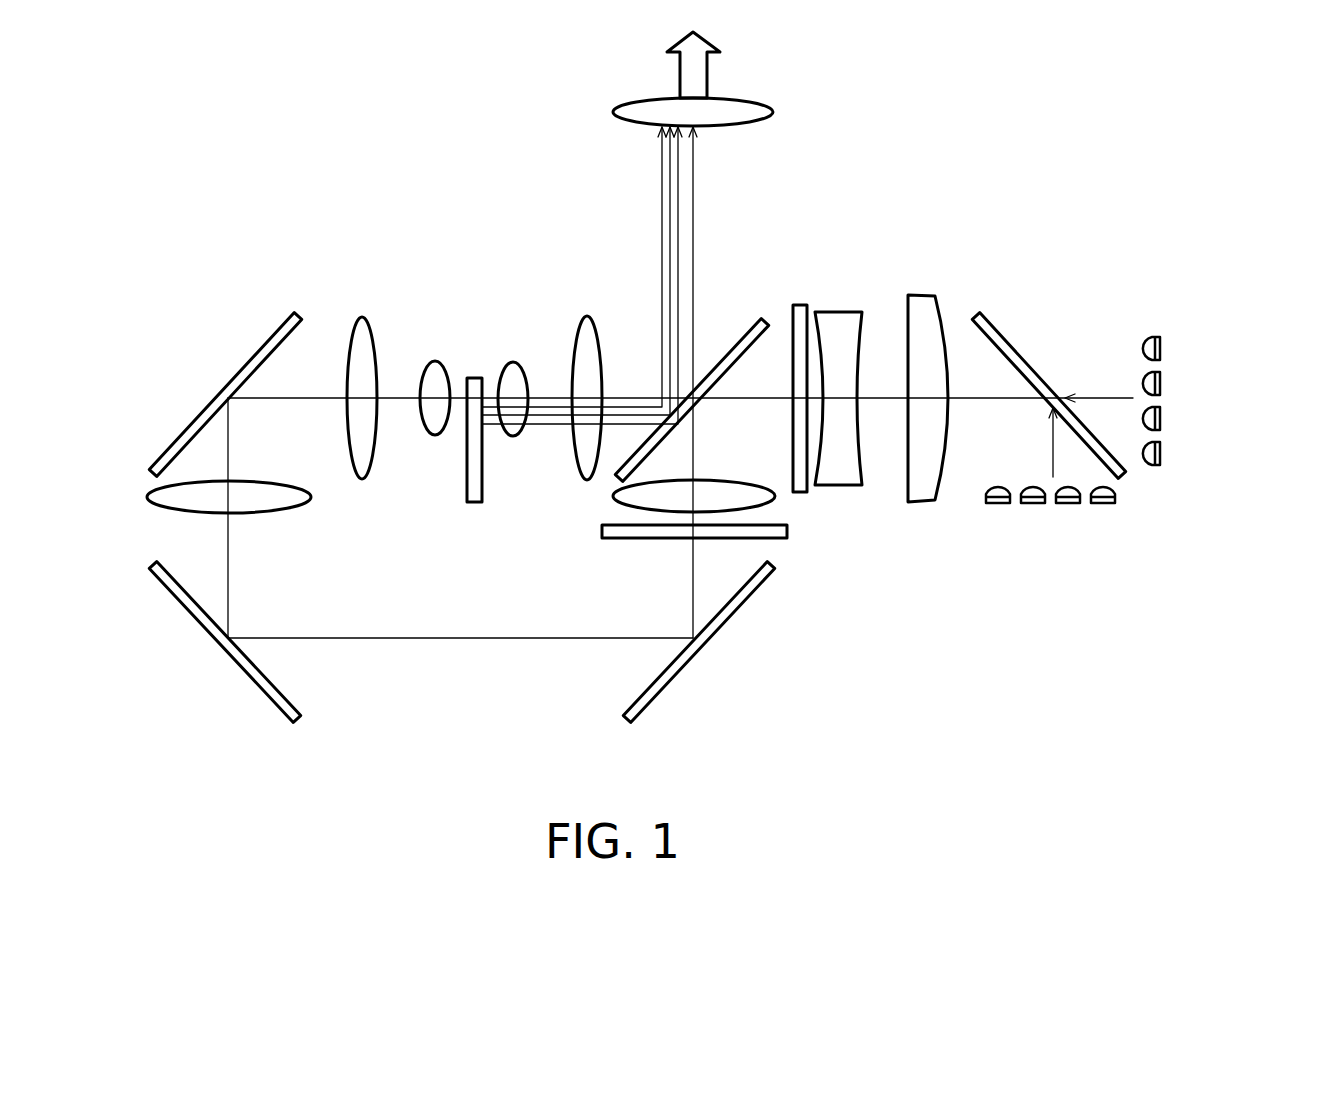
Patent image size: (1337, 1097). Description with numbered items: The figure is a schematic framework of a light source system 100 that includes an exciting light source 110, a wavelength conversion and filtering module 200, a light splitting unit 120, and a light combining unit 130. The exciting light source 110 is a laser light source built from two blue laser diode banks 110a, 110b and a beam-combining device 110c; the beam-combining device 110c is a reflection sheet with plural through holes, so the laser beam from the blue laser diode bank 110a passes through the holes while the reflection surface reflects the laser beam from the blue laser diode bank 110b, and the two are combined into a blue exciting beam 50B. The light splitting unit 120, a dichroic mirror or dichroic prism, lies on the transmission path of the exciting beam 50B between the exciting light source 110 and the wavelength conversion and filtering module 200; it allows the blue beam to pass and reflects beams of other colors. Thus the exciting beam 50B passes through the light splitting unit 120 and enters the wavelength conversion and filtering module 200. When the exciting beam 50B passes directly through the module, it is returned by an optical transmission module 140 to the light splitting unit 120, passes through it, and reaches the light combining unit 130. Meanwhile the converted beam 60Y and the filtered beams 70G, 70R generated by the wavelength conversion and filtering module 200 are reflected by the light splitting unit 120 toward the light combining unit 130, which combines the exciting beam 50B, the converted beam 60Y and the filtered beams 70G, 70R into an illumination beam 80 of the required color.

The light source system 100 is at (1227, 773).
The exciting light source 110 is at (1138, 436).
The blue laser diode bank 110a is at (1162, 418).
The blue laser diode bank 110b is at (1105, 503).
The beam-combining device 110c is at (1125, 477).
The light splitting unit 120 is at (768, 320).
The light combining unit 130 is at (722, 127).
The optical transmission module 140 is at (272, 328).
The wavelength conversion and filtering module 200 is at (473, 377).
The exciting beam 50B is at (990, 398).
The converted beam 60Y is at (662, 180).
The filtered beam 70G is at (670, 220).
The filtered beam 70R is at (678, 262).
The illumination beam 80 is at (707, 75).